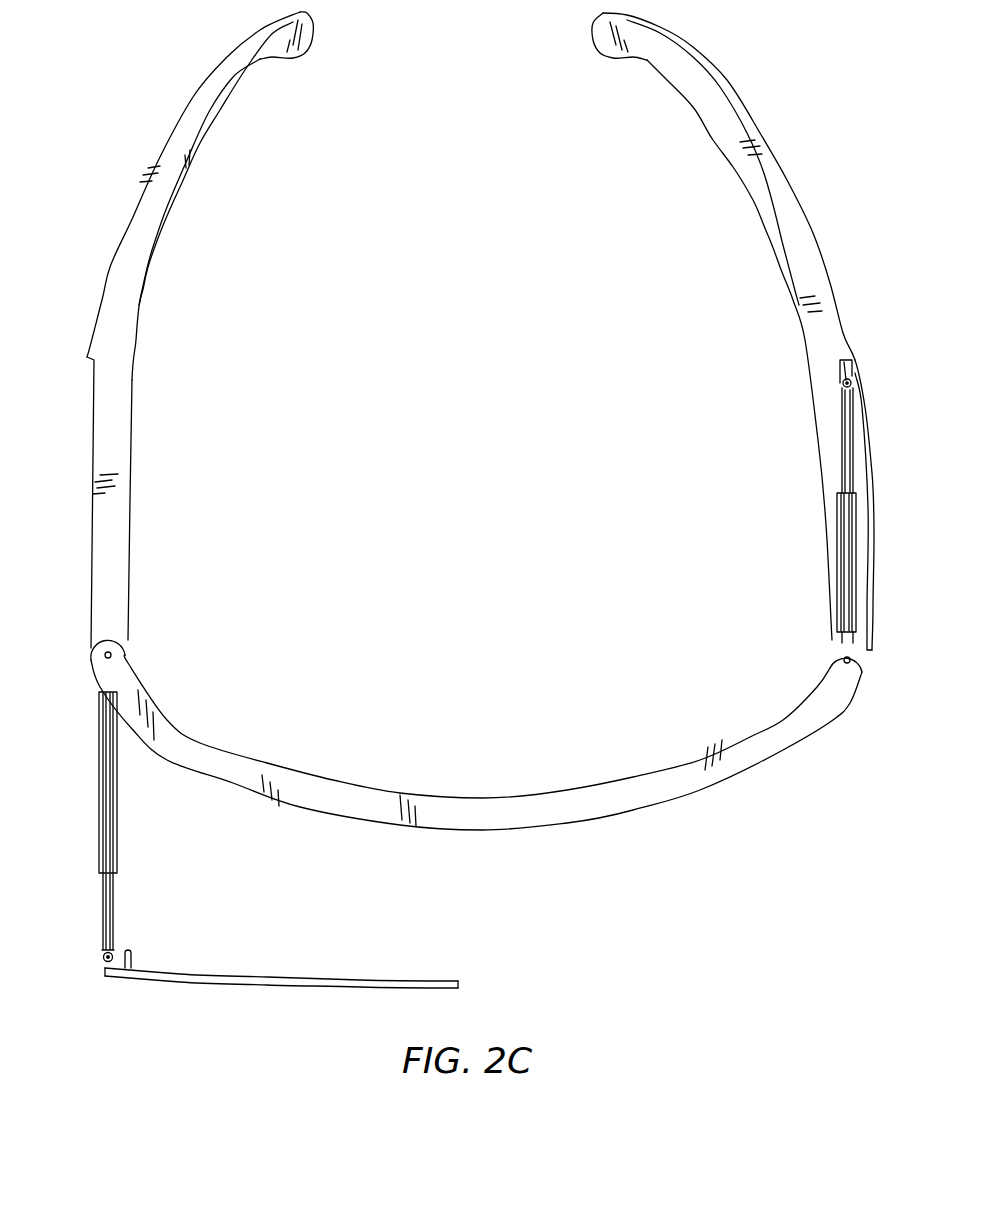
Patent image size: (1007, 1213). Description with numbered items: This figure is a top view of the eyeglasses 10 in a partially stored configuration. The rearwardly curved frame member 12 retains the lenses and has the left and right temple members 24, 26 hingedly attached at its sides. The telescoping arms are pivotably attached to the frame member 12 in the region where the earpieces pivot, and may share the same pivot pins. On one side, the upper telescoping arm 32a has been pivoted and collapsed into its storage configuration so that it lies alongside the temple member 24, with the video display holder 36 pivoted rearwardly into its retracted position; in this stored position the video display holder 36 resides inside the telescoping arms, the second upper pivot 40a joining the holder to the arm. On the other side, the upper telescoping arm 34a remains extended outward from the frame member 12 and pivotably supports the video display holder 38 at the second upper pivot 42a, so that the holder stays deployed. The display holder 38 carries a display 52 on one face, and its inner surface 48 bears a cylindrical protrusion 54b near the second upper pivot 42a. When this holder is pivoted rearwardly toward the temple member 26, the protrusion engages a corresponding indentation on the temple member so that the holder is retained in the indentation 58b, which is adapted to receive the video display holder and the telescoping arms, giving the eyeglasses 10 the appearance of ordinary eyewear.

The eyeglasses 10 is at (452, 258).
The frame member 12 is at (478, 815).
The temple member 24 is at (676, 81).
The temple member 26 is at (234, 86).
The upper telescoping arm 32a is at (838, 535).
The upper telescoping arm 34a is at (118, 850).
The video display holder 36 is at (876, 449).
The video display holder 38 is at (330, 996).
The second upper pivot 40a is at (849, 377).
The second upper pivot 42a is at (103, 965).
The inner surface 48 is at (253, 977).
The display 52 is at (425, 980).
The cylindrical protrusion 54b is at (133, 957).
The indentation 58b is at (90, 462).